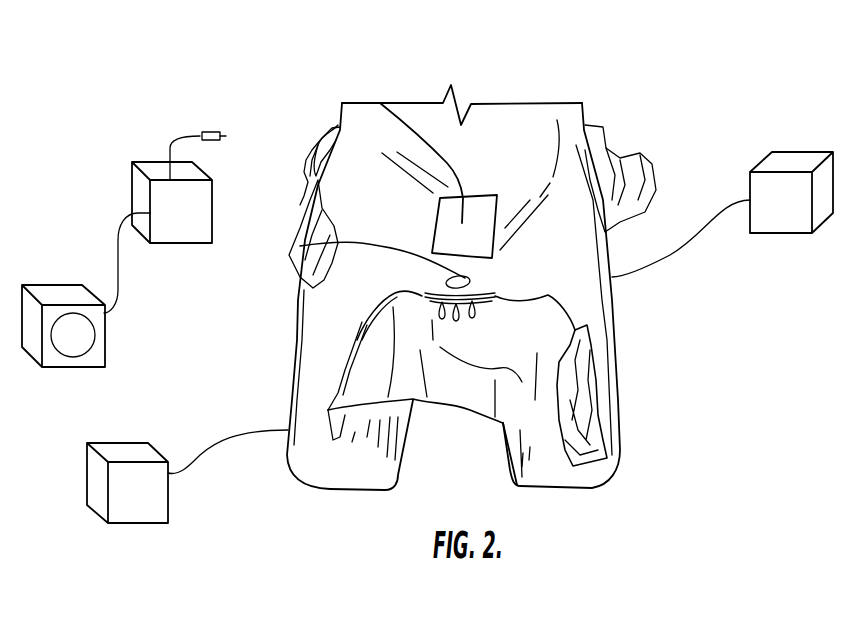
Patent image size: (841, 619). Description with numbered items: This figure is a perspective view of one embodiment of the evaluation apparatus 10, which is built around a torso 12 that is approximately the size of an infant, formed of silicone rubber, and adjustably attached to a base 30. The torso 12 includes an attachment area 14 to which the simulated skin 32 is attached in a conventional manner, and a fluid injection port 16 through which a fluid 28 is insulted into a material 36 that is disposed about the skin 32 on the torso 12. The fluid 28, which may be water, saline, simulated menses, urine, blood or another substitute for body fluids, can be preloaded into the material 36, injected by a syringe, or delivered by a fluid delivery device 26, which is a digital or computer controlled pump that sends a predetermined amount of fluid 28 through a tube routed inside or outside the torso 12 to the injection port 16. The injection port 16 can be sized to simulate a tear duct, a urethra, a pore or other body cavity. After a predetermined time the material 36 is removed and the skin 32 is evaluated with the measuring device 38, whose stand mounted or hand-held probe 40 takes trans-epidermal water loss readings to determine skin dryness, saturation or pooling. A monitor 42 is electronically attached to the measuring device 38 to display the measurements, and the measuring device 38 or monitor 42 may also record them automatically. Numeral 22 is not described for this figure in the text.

The evaluation apparatus 10 is at (579, 64).
The torso 12 is at (478, 128).
The attachment area 14 is at (380, 103).
The fluid injection port 16 is at (300, 246).
The controller 22 is at (126, 504).
The fluid delivery device 26 is at (771, 213).
The fluid 28 is at (467, 336).
The base 30 is at (605, 487).
The simulated skin 32 is at (487, 230).
The material 36 is at (456, 402).
The measuring device 38 is at (169, 224).
The probe 40 is at (203, 131).
The monitor 42 is at (62, 348).